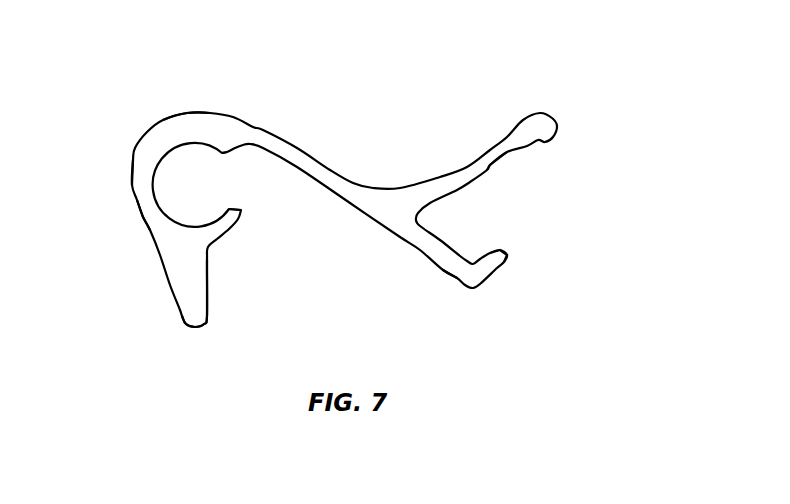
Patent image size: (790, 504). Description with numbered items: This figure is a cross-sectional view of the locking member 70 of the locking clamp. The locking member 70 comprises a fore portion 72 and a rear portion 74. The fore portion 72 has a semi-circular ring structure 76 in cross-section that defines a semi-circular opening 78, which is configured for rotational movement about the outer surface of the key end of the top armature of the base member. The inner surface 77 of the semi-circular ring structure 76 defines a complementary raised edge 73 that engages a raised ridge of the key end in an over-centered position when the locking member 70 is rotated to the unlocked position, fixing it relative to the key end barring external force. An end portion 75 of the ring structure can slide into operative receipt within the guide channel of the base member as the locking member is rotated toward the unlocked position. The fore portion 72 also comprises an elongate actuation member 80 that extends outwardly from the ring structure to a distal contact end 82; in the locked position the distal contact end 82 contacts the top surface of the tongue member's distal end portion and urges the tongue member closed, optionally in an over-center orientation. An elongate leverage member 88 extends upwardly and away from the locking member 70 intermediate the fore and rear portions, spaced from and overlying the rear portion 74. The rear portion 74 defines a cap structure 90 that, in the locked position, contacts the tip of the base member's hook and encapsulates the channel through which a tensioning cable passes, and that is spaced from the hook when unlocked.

The locking member 70 is at (593, 182).
The fore portion 72 is at (127, 215).
The raised edge 73 is at (225, 155).
The rear portion 74 is at (443, 271).
The end portion 75 is at (242, 211).
The semi-circular ring structure 76 is at (190, 113).
The inner surface 77 is at (152, 168).
The semi-circular opening 78 is at (206, 194).
The elongate actuation member 80 is at (208, 286).
The distal contact end 82 is at (197, 328).
The elongate leverage member 88 is at (488, 172).
The cap structure 90 is at (511, 261).